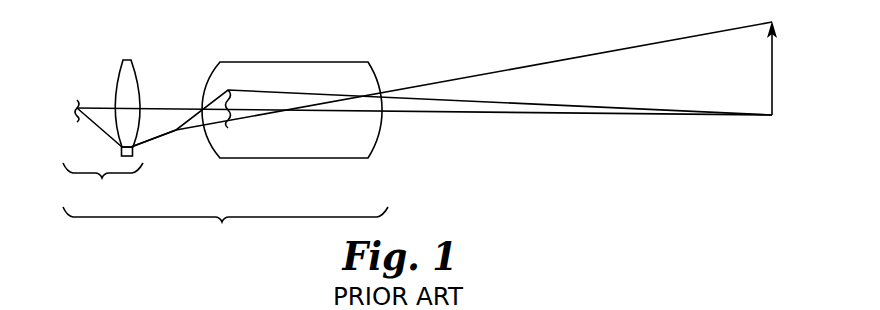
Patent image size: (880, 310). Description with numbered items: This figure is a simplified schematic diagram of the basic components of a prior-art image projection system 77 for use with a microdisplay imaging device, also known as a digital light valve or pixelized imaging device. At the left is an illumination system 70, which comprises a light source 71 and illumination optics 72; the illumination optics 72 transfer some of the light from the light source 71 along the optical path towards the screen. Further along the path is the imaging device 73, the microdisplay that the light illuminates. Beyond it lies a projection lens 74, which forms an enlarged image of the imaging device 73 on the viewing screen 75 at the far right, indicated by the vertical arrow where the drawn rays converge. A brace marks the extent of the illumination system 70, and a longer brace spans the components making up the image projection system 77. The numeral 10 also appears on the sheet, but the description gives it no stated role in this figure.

The optical system 10 is at (640, 309).
The illumination system 70 is at (103, 185).
The light source 71 is at (75, 101).
The illumination optics 72 is at (128, 61).
The imaging device 73 is at (176, 124).
The projection lens 74 is at (290, 67).
The viewing screen 75 is at (771, 73).
The image projection system 77 is at (225, 230).